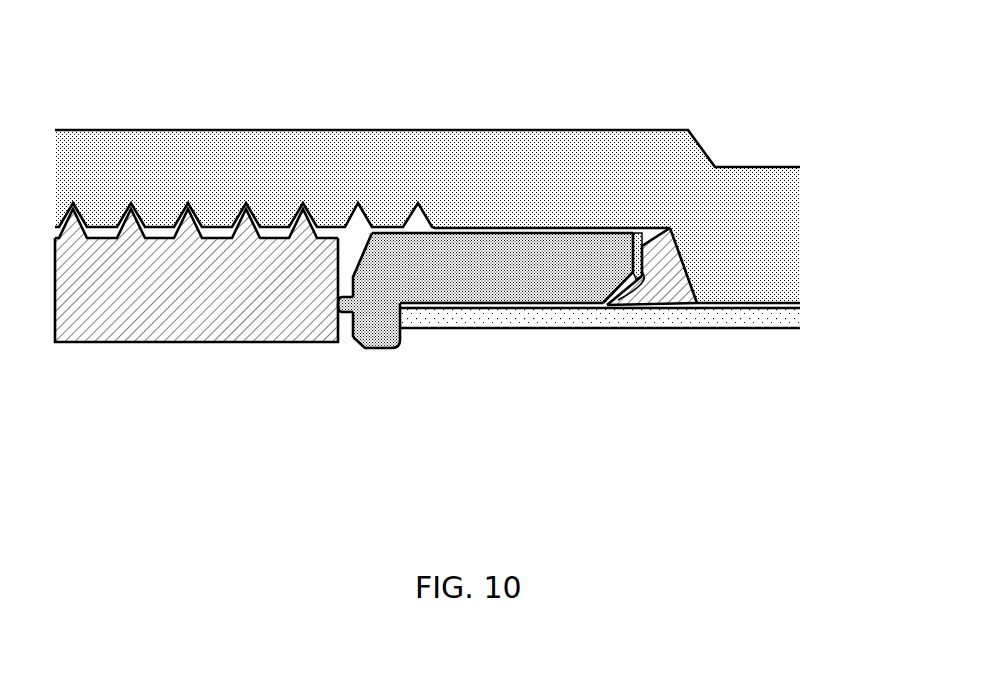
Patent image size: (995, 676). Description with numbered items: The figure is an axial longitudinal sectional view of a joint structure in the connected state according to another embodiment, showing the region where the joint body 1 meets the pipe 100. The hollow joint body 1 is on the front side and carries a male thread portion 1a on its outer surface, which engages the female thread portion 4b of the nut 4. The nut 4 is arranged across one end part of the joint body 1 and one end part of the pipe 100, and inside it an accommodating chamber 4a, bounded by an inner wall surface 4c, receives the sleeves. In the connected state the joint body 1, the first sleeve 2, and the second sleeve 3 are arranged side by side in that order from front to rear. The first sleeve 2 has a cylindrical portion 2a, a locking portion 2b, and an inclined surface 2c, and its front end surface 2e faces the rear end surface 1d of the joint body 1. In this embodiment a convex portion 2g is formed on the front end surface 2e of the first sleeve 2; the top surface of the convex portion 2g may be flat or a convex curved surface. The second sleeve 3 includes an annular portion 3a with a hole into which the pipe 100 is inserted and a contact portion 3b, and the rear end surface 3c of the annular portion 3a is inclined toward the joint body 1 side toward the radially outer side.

The joint body 1 is at (72, 295).
The male thread portion 1a is at (178, 220).
The rear end surface 1d is at (378, 350).
The first sleeve 2 is at (565, 92).
The cylindrical portion 2a is at (480, 240).
The locking portion 2b is at (373, 258).
The inclined surface 2c is at (650, 228).
The front end surface 2e is at (352, 275).
The convex portion 2g is at (342, 301).
The second sleeve 3 is at (732, 418).
The annular portion 3a is at (632, 305).
The contact portion 3b is at (610, 303).
The rear end surface 3c is at (688, 280).
The nut 4 is at (263, 152).
The accommodating chamber 4a is at (668, 232).
The female thread portion 4b is at (253, 222).
The inner wall surface 4c is at (680, 250).
The pipe 100 is at (753, 322).